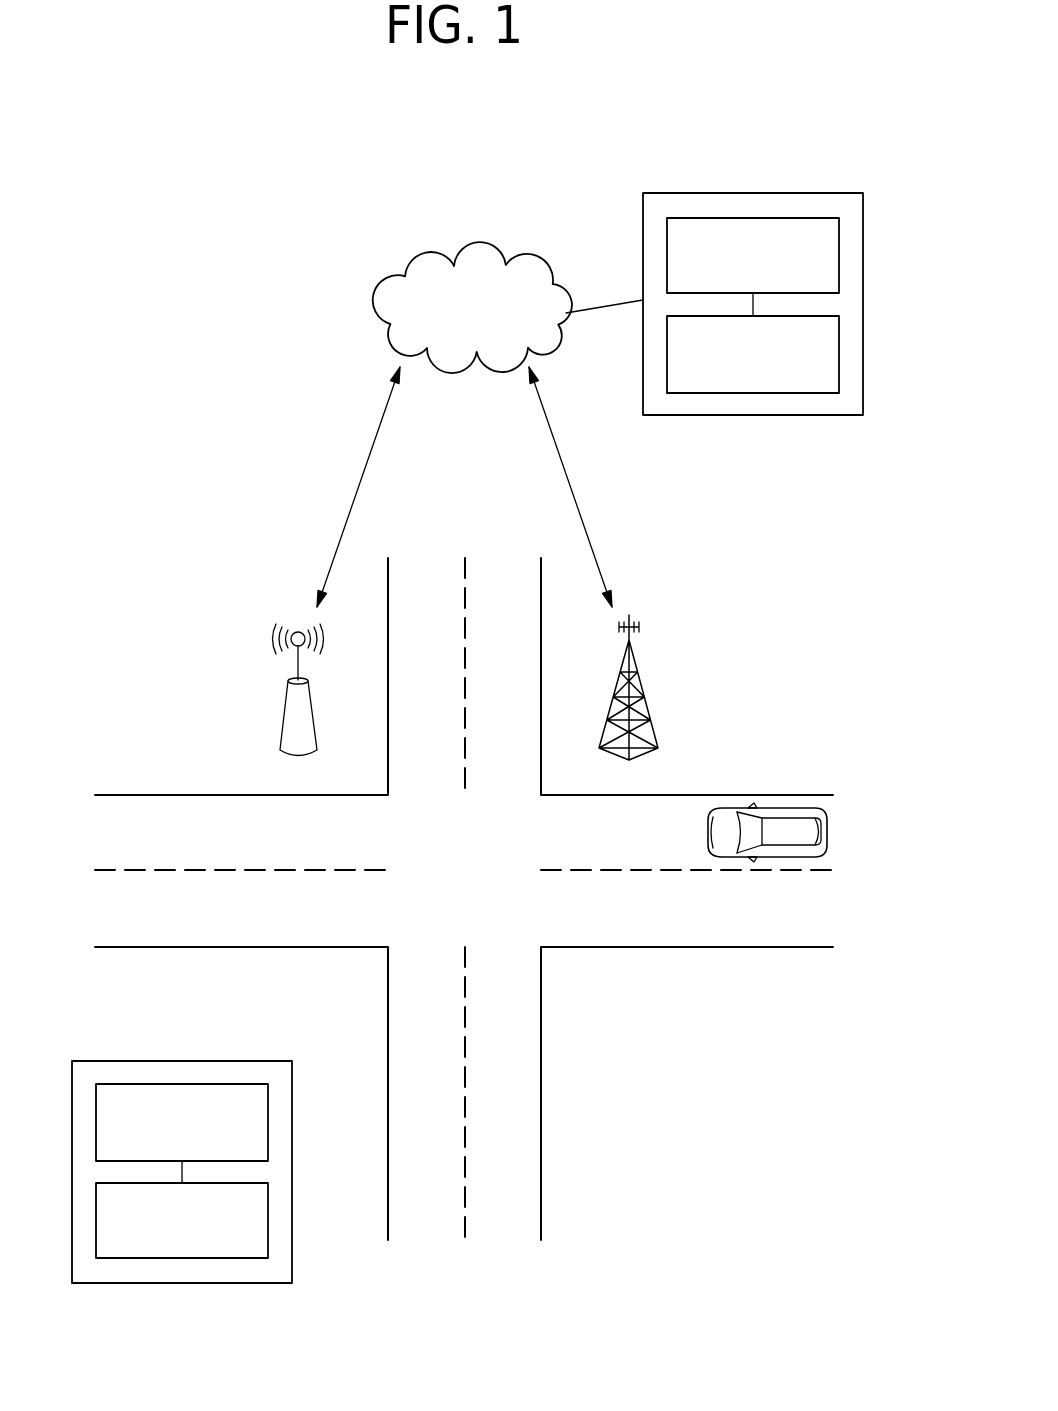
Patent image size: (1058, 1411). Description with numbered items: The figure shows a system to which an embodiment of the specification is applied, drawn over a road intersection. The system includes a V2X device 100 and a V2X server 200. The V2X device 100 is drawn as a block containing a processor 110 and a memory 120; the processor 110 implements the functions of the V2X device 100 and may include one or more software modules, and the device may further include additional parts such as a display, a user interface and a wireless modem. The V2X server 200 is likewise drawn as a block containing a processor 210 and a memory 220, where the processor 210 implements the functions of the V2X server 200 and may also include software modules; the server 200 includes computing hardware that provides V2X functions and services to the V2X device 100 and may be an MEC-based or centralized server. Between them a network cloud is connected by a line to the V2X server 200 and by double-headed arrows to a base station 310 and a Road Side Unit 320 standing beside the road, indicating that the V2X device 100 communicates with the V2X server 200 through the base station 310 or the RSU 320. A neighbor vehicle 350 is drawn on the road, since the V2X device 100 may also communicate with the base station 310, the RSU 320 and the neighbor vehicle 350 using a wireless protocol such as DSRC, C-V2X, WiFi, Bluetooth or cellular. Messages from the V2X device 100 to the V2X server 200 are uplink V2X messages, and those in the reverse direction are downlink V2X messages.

The V2X device 100 is at (181, 1061).
The processor 110 is at (268, 1121).
The memory 120 is at (268, 1218).
The V2X server 200 is at (752, 193).
The processor 210 is at (840, 255).
The memory 220 is at (840, 352).
The base station 310 is at (647, 690).
The Road Side Unit (RSU) 320 is at (285, 700).
The neighbor vehicle 350 is at (757, 806).